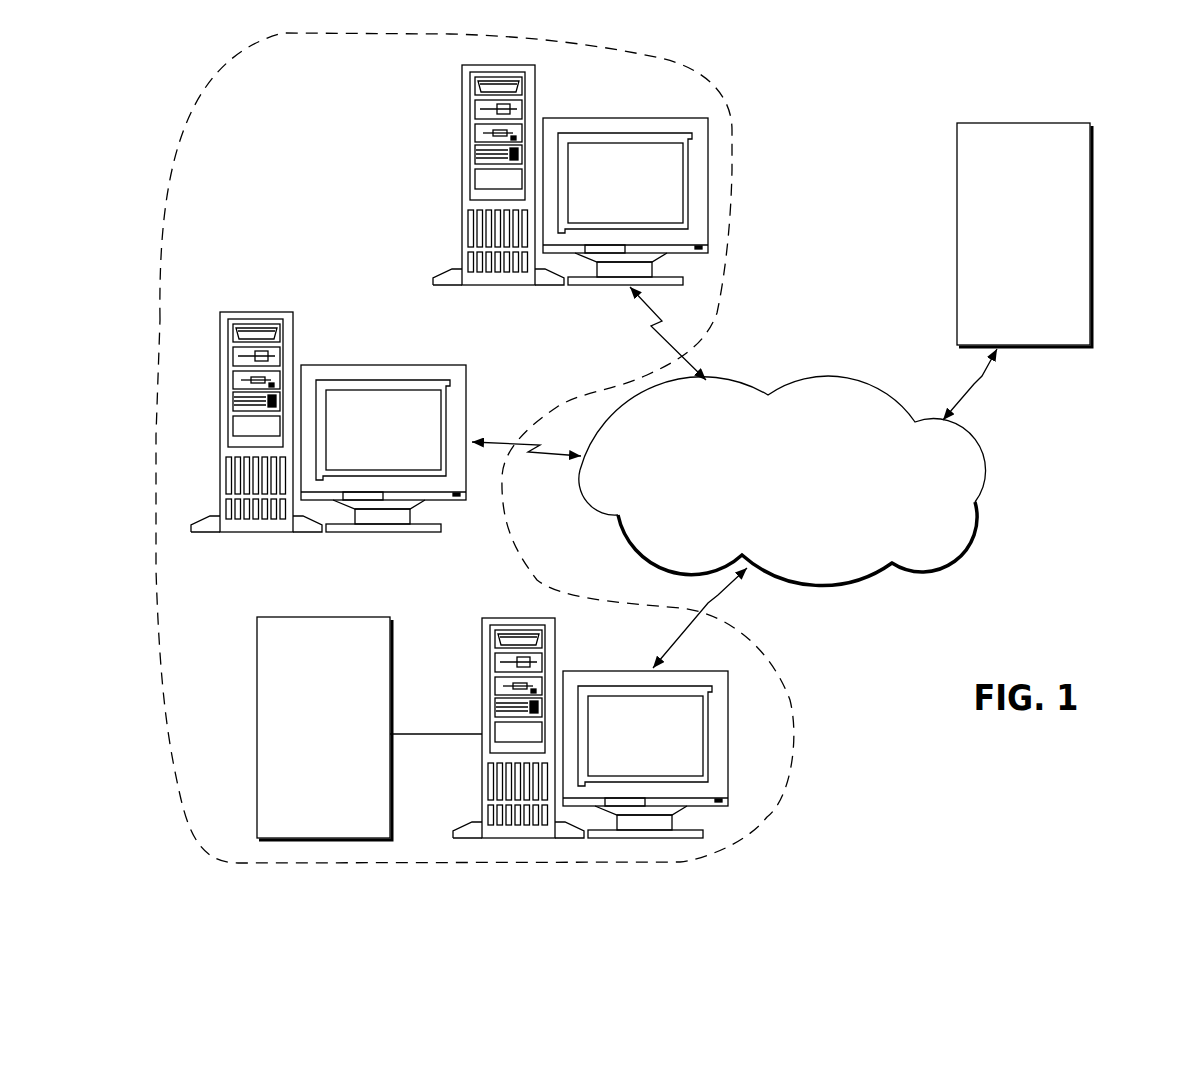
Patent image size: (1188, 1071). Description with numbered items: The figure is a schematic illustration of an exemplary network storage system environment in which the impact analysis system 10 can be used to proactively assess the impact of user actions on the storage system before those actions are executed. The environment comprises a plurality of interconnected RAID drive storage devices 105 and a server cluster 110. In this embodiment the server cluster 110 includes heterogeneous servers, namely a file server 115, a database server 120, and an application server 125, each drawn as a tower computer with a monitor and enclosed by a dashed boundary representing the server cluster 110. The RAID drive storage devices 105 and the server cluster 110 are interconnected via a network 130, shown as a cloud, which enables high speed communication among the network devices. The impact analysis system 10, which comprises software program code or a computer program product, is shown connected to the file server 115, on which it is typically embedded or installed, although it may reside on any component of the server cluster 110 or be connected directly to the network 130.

The impact analysis system 10 is at (257, 642).
The RAID drive storage devices 105 is at (957, 145).
The server cluster 110 is at (735, 127).
The file server 115 is at (482, 658).
The database server 120 is at (220, 352).
The application server 125 is at (462, 103).
The network 130 is at (993, 447).